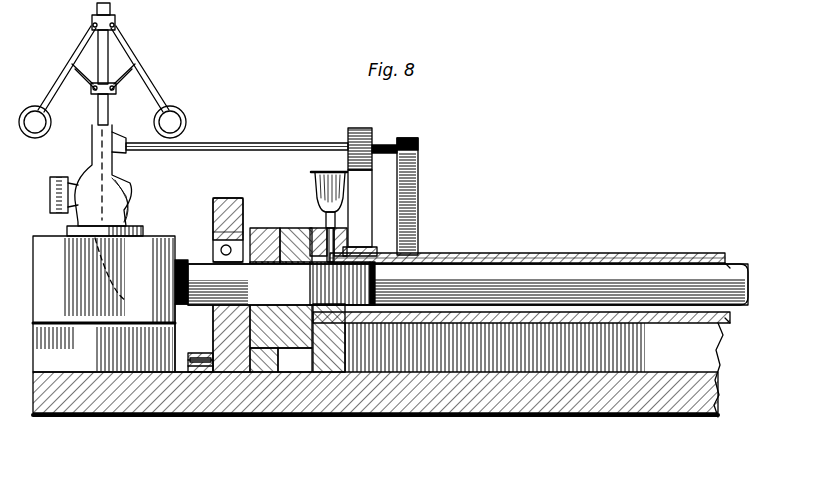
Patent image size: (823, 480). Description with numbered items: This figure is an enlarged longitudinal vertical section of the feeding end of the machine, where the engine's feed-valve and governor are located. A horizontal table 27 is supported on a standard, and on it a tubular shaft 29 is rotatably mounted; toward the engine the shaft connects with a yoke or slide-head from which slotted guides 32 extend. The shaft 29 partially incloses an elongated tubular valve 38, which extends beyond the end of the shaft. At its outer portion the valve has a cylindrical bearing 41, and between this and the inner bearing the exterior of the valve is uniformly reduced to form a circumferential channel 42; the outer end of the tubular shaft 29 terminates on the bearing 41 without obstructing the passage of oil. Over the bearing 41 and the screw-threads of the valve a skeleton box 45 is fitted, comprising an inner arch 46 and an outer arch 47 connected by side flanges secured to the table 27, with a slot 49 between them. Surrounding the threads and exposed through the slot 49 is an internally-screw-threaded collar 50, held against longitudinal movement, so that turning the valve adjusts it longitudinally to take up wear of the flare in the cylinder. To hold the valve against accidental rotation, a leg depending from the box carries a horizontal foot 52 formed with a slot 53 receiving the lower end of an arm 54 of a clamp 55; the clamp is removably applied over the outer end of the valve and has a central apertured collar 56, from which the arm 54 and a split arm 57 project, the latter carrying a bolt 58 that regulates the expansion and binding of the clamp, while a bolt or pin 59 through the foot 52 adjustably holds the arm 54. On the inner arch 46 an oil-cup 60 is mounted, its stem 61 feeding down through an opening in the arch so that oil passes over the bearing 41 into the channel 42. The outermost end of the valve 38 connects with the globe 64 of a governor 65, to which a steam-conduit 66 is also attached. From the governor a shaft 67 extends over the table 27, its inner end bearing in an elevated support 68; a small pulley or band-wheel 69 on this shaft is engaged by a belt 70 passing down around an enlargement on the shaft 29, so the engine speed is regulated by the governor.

The horizontal table 27 is at (378, 386).
The tubular shaft 29 is at (672, 256).
The slotted guides 32 is at (495, 347).
The elongated tubular valve 38 is at (569, 257).
The cylindrical bearing 41 is at (418, 255).
The circumferential channel 42 is at (500, 258).
The skeleton box 45 is at (279, 257).
The inner arch 46 is at (330, 372).
The outer arch 47 is at (265, 253).
The slot 49 is at (313, 228).
The internally-screw-threaded collar 50 is at (281, 291).
The horizontal foot 52 is at (197, 370).
The slot 53 is at (123, 304).
The arm 54 is at (213, 352).
The clamp 55 is at (212, 217).
The central apertured collar 56 is at (221, 252).
The arm 57 is at (220, 433).
The bolt 58 is at (213, 243).
The bolt or pin 59 is at (180, 372).
The oil-cup 60 is at (328, 172).
The stem 61 is at (336, 213).
The globe 64 is at (131, 188).
The governor 65 is at (102, 70).
The steam-conduit 66 is at (88, 182).
The shaft 67 is at (230, 139).
The elevated support 68 is at (412, 186).
The small pulley or band-wheel 69 is at (376, 146).
The belt 70 is at (360, 137).